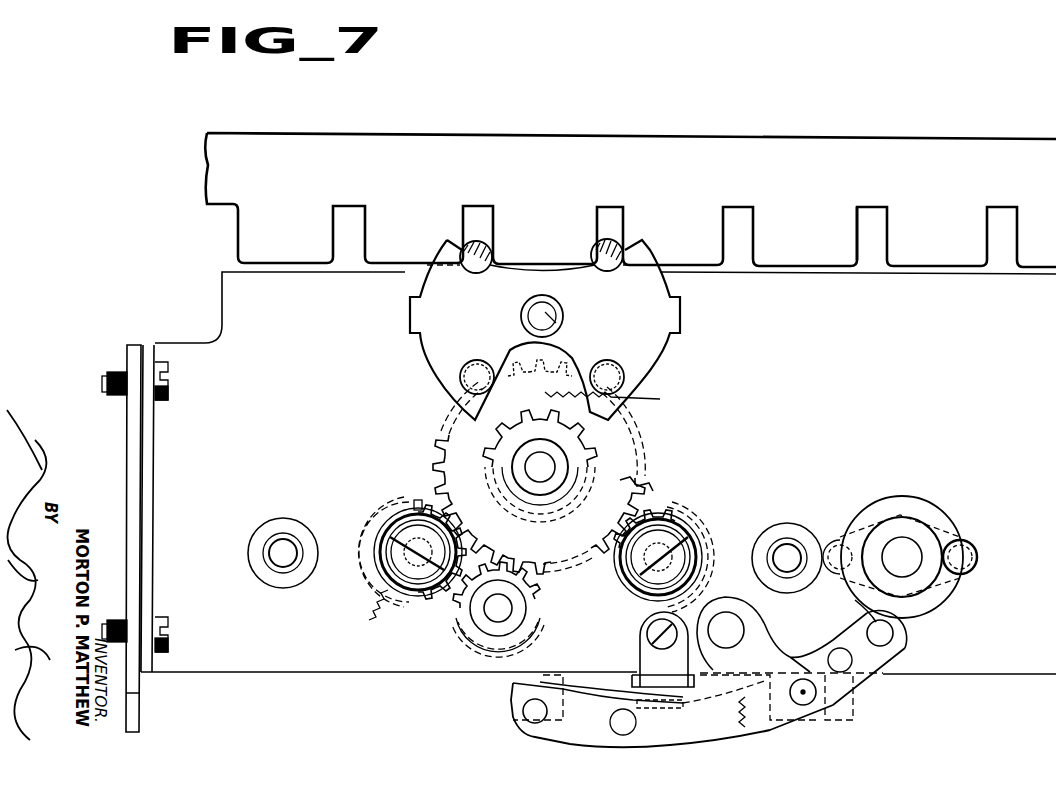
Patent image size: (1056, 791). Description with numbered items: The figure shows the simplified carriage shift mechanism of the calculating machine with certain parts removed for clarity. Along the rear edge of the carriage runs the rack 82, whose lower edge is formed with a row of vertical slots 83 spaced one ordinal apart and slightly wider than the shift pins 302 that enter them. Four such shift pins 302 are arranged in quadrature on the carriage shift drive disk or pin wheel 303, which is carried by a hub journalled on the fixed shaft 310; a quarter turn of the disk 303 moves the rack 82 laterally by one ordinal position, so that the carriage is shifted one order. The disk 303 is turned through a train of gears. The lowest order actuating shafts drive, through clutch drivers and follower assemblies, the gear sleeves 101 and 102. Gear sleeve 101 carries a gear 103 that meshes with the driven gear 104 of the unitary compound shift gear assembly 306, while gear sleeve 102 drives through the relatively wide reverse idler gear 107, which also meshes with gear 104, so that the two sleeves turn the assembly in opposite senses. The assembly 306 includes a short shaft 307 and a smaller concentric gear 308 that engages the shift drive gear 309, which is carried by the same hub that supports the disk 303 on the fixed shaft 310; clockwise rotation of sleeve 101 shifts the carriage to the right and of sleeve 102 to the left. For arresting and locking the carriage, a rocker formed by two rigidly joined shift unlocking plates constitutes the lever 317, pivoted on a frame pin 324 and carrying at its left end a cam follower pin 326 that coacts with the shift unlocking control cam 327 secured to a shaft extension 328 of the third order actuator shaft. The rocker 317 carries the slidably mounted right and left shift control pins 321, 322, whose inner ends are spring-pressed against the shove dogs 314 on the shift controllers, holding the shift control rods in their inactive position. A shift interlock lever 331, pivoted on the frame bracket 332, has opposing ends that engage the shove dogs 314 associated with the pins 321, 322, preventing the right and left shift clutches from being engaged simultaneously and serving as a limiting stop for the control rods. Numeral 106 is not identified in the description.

The rack 82 is at (736, 152).
The vertical slots 83 is at (478, 222).
The shift pins 302 is at (490, 252).
The carriage shift drive disk (pin wheel) 303 is at (652, 283).
The fixed shaft 310 is at (550, 320).
The shift drive gear 309 is at (622, 399).
The smaller concentric gear 308 is at (492, 455).
The short shaft 307 is at (540, 467).
The shift gear assembly 306 is at (655, 452).
The driven gear 104 is at (653, 488).
The gear 106 is at (418, 500).
The gear sleeve 102 is at (387, 614).
The reverse idler gear 107 is at (540, 592).
The gear 103 is at (678, 514).
The gear sleeve 101 is at (698, 533).
The frame bracket 332 is at (650, 654).
The pin 324 is at (726, 633).
The cam follower pin 326 is at (880, 634).
The shaft extension 328 is at (897, 560).
The shift unlocking control cam 327 is at (928, 608).
The shift unlocking plate (rocker) 317 is at (662, 735).
The right shift control pin 321 is at (535, 712).
The shove dog 314 is at (520, 683).
The shift interlock lever 331 is at (745, 727).
The left shift control pin 322 is at (805, 695).